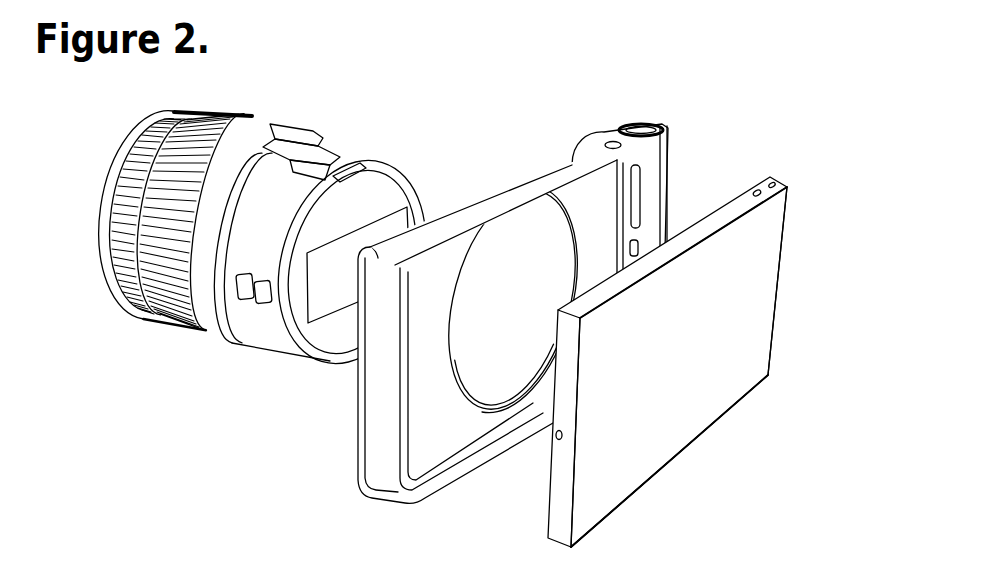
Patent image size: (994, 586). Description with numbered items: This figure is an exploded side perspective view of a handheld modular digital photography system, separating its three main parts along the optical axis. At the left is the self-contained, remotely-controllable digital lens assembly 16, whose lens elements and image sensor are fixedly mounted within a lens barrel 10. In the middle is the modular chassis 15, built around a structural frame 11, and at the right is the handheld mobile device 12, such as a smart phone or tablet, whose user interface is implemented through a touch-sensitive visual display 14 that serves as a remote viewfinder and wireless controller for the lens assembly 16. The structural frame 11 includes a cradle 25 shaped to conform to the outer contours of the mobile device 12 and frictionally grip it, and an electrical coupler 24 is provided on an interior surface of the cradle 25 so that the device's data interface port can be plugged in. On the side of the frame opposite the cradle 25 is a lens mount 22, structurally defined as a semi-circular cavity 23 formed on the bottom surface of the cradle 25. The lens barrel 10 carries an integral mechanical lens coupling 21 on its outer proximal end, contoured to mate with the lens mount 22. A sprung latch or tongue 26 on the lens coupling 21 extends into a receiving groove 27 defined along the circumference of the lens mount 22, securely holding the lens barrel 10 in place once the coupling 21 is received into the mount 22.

The lens barrel 10 is at (260, 217).
The structural frame 11 is at (509, 284).
The handheld mobile device 12 is at (710, 362).
The touch-sensitive visual display 14 is at (737, 353).
The modular chassis 15 is at (547, 145).
The digital lens assembly 16 is at (96, 186).
The mechanical lens coupling 21 is at (418, 187).
The lens mount 22 is at (577, 276).
The semi-circular cavity 23 is at (501, 260).
The electrical coupler 24 is at (631, 200).
The cradle 25 is at (425, 438).
The sprung latch or tongue 26 is at (349, 165).
The receiving groove 27 is at (510, 405).